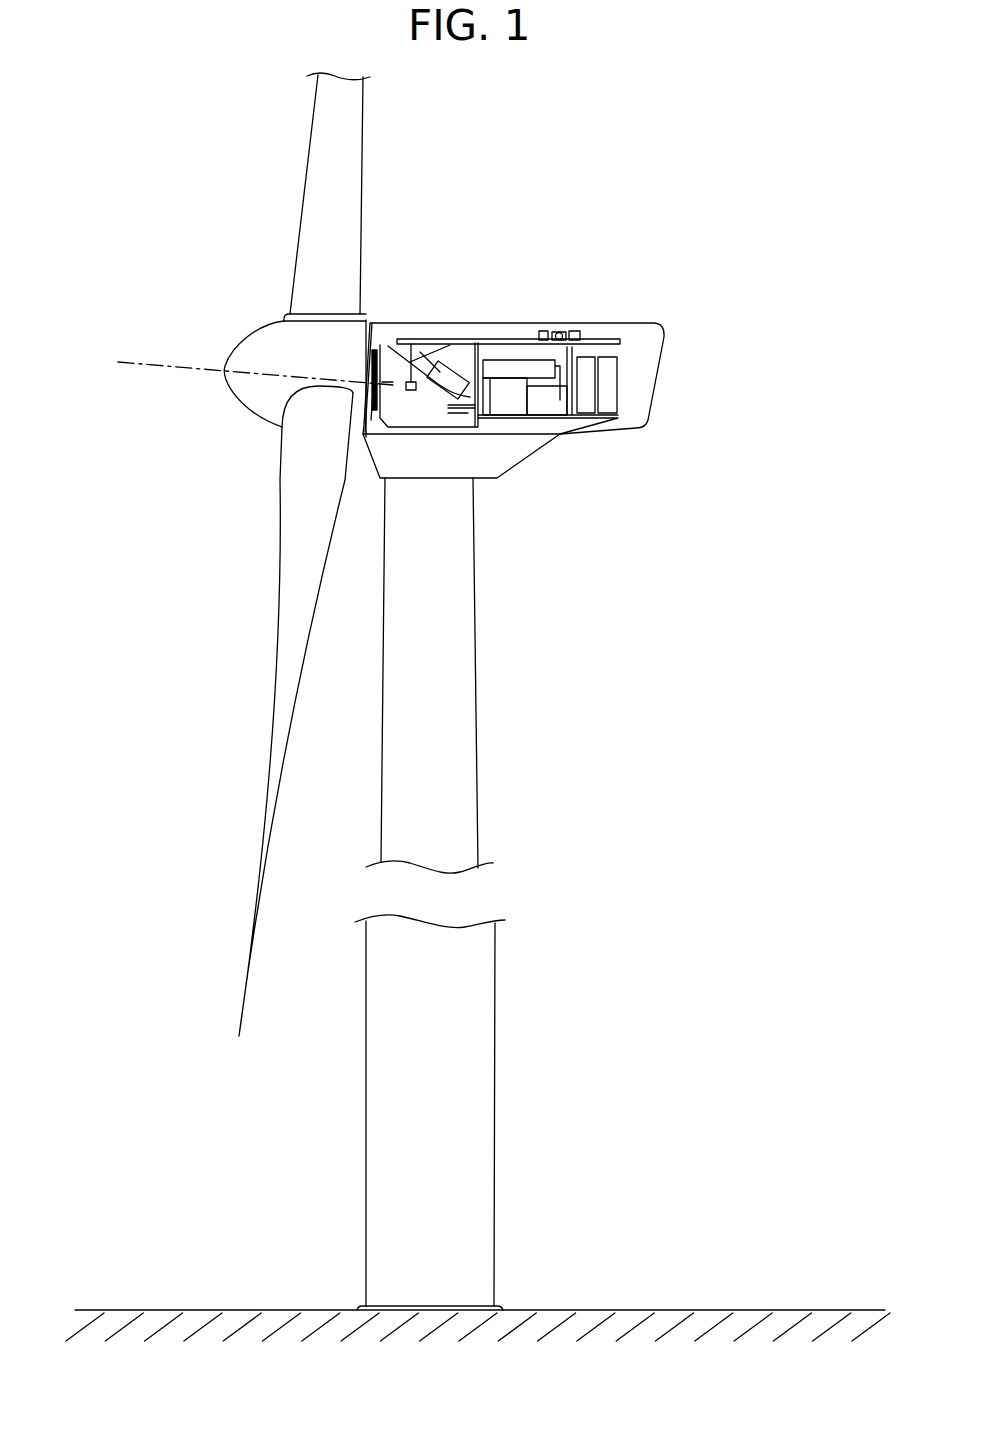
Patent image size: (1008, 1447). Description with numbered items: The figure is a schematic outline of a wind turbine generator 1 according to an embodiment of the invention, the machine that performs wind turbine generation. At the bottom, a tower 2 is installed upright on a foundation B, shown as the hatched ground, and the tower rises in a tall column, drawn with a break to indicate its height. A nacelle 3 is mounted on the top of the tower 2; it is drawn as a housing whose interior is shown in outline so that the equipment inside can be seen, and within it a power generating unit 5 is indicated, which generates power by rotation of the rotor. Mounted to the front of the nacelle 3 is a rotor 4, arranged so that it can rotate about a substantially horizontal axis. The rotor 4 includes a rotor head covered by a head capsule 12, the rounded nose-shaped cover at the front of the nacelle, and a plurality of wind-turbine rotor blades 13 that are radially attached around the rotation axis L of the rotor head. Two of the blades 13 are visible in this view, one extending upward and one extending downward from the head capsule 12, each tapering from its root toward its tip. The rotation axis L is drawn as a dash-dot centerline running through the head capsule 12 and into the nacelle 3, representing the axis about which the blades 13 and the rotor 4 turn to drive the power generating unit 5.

The wind turbine generator 1 is at (669, 175).
The tower 2 is at (488, 1078).
The nacelle 3 is at (674, 368).
The rotor 4 is at (220, 388).
The power generating unit 5 is at (525, 338).
The head capsule 12 is at (250, 348).
The wind-turbine rotor blades 13 is at (313, 152).
The rotation axis L is at (148, 358).
The foundation B is at (358, 1309).